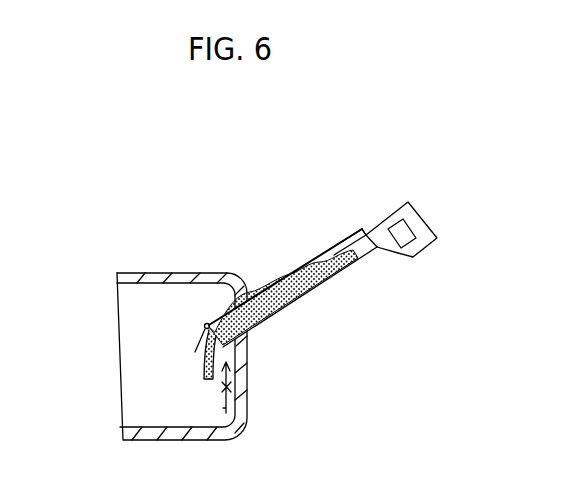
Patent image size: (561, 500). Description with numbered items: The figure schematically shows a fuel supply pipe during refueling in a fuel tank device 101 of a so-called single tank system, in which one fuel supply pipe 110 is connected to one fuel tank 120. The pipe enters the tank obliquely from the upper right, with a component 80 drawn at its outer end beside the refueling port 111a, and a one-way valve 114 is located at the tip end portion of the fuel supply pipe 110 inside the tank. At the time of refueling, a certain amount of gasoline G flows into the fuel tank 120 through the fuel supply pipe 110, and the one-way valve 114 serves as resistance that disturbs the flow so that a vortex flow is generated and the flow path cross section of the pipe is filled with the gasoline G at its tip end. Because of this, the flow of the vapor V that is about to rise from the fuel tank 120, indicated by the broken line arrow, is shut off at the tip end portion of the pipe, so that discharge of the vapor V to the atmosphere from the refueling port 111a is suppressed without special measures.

The fuel tank 120 is at (188, 277).
The fuel supply pipe 110 is at (293, 274).
The refueling port 111a is at (363, 230).
The gasoline G is at (330, 262).
The one-way valve 114 is at (200, 340).
The connector block 80 is at (421, 216).
The fuel tank device 101 is at (304, 347).
The vapor V is at (237, 405).